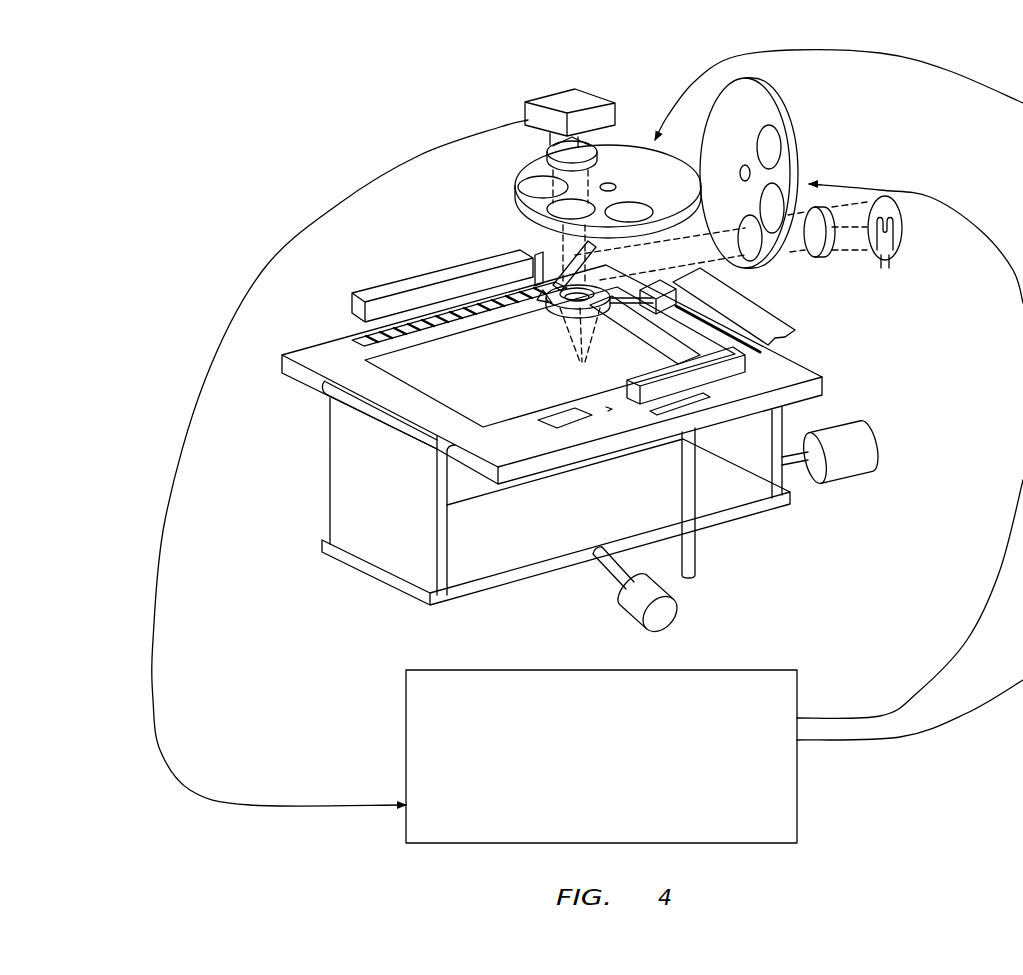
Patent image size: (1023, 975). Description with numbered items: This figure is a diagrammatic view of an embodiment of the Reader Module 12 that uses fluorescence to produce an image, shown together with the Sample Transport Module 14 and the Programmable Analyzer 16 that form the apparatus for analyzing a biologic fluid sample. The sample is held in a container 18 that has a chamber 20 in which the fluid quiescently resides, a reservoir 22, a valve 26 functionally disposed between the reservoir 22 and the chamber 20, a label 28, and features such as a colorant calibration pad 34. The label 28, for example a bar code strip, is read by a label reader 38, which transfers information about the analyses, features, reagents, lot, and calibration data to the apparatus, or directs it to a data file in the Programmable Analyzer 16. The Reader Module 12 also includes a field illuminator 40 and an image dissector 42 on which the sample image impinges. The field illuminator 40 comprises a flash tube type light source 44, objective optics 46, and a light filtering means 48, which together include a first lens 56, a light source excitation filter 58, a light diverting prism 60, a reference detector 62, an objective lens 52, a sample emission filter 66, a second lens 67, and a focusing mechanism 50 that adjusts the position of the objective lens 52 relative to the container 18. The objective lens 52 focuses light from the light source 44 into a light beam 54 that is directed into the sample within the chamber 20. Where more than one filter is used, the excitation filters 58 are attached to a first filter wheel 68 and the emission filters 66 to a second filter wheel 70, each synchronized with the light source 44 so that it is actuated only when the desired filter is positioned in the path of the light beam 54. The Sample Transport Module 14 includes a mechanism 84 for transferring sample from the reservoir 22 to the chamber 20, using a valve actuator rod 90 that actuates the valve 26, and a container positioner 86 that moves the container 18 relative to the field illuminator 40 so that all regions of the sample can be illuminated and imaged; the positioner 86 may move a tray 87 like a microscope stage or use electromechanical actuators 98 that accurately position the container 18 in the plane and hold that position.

The Reader Module 12 is at (348, 148).
The Sample Transport Module 14 is at (603, 374).
The Programmable Analyzer 16 is at (705, 781).
The container 18 is at (293, 383).
The chamber 20 is at (470, 412).
The reservoir 22 is at (740, 372).
The valve 26 is at (683, 402).
The label 28 is at (353, 334).
The colorant calibration pad 34 is at (546, 423).
The label reader 38 is at (432, 276).
The field illuminator 40 is at (583, 133).
The image dissector 42 is at (568, 105).
The light source 44 is at (899, 242).
The objective optics 46 is at (795, 182).
The light filtering means 48 is at (807, 160).
The focusing mechanism 50 is at (672, 302).
The objective lens 52 is at (589, 292).
The light beam 54 is at (597, 340).
The first lens 56 is at (833, 248).
The light source excitation filter 58 is at (768, 132).
The light diverting prism 60 is at (540, 312).
The reference detector 62 is at (530, 253).
The sample emission filter 66 is at (625, 198).
The second lens 67 is at (540, 150).
The first filter wheel 68 is at (752, 97).
The second filter wheel 70 is at (608, 146).
The mechanism for transferring biologic fluid sample 84 is at (740, 510).
The container positioner 86 is at (518, 594).
The tray 87 is at (350, 490).
The rod 90 is at (693, 552).
The electromechanical actuators 98 is at (797, 705).